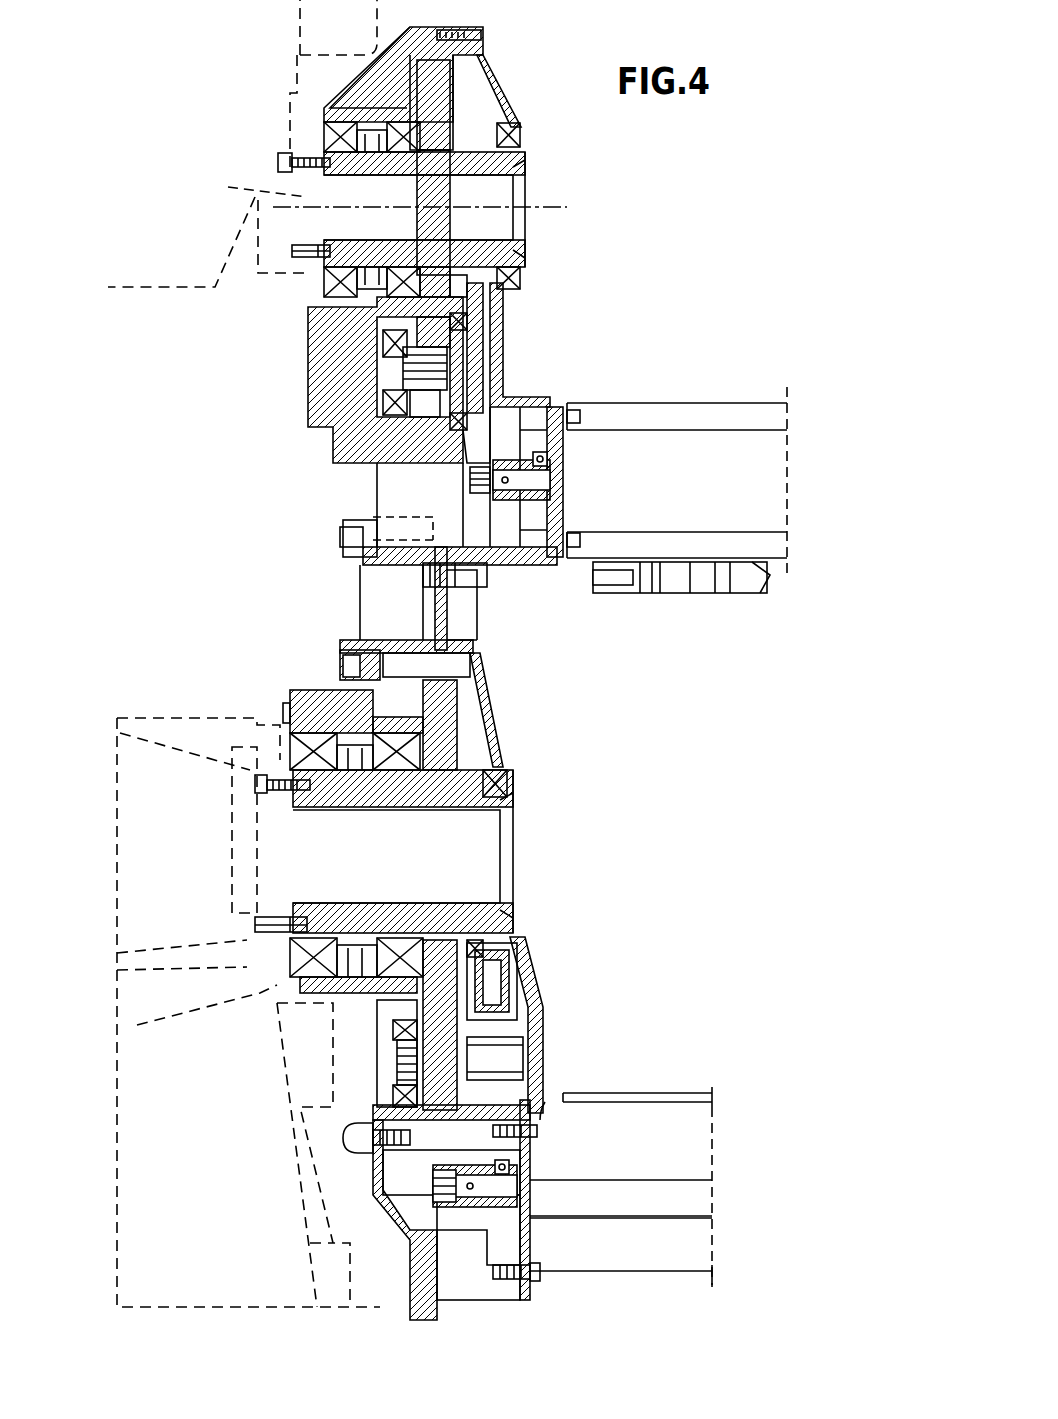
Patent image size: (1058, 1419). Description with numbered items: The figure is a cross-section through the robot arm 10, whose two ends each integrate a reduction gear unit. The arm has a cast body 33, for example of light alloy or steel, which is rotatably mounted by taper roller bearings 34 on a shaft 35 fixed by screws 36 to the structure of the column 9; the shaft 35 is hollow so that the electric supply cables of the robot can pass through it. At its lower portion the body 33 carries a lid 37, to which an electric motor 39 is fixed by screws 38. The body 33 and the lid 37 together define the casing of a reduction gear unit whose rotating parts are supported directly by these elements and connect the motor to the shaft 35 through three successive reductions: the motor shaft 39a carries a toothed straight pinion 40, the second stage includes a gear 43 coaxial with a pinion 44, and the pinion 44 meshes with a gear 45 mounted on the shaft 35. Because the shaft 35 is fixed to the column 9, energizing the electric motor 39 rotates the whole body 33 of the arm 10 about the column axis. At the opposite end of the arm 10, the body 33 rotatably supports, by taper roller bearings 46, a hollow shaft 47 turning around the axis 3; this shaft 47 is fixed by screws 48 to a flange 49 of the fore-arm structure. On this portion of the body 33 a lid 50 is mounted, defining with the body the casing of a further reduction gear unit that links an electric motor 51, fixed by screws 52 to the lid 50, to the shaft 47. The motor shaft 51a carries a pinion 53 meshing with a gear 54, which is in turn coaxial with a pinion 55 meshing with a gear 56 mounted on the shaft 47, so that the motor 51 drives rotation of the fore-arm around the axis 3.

The axis 3 is at (490, 207).
The column 9 is at (275, 853).
The arm 10 is at (607, 675).
The body 33 is at (358, 598).
The taper roller bearings 34 is at (310, 740).
The shaft 35 is at (452, 808).
The screws 36 is at (258, 783).
The lid 37 is at (540, 985).
The screws 38 is at (565, 1118).
The electric motor 39 is at (645, 1120).
The shaft 39a is at (510, 1177).
The toothed straight pinion 40 is at (430, 1185).
The gear 43 is at (500, 958).
The pinion 44 is at (425, 1062).
The gear 45 is at (440, 720).
The taper roller bearings 46 is at (385, 117).
The shaft 47 is at (500, 252).
The screws 48 is at (281, 153).
The flange 49 is at (260, 177).
The lid 50 is at (500, 352).
The electric motor 51 is at (685, 440).
The shaft 51a is at (545, 480).
The screws 52 is at (580, 415).
The pinion 53 is at (480, 493).
The gear 54 is at (515, 415).
The pinion 55 is at (415, 372).
The gear 56 is at (448, 95).